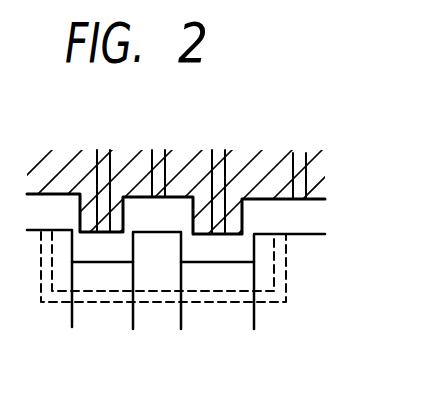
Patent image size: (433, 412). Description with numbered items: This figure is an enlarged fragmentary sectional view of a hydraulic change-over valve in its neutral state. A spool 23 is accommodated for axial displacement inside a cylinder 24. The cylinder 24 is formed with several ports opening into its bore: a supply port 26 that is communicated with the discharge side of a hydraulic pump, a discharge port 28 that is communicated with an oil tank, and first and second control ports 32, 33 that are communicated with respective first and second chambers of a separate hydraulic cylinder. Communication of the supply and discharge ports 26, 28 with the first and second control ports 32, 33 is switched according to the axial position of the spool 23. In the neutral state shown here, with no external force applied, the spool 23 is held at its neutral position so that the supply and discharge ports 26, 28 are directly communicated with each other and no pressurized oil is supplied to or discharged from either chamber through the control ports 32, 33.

The spool 23 is at (300, 250).
The cylinder 24 is at (267, 200).
The supply port 26 is at (158, 193).
The discharge port 28 is at (302, 182).
The first control port 32 is at (98, 183).
The second control port 33 is at (214, 156).